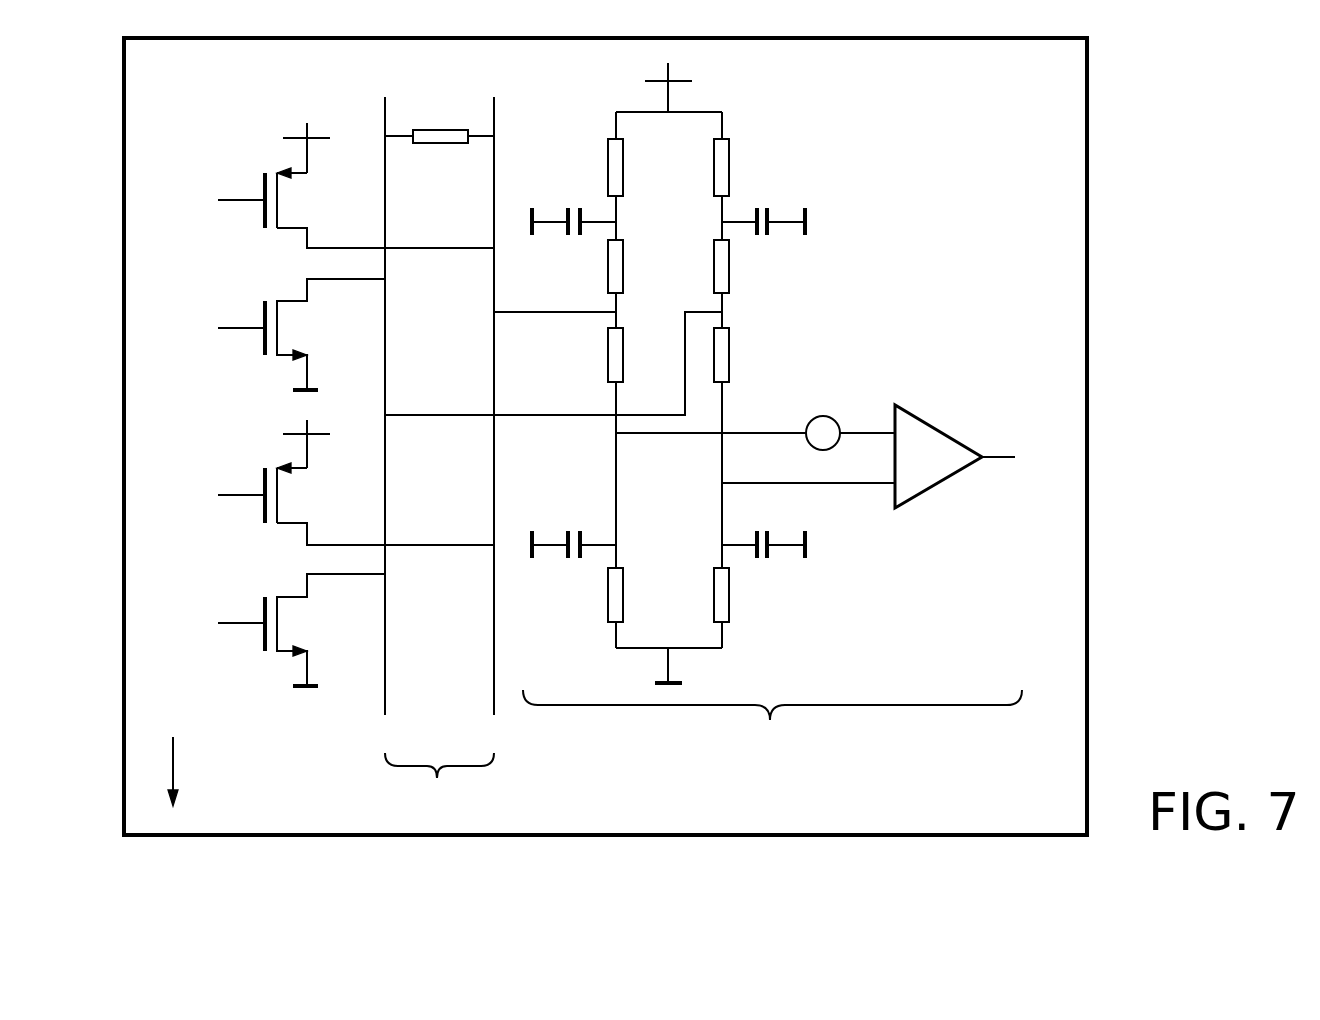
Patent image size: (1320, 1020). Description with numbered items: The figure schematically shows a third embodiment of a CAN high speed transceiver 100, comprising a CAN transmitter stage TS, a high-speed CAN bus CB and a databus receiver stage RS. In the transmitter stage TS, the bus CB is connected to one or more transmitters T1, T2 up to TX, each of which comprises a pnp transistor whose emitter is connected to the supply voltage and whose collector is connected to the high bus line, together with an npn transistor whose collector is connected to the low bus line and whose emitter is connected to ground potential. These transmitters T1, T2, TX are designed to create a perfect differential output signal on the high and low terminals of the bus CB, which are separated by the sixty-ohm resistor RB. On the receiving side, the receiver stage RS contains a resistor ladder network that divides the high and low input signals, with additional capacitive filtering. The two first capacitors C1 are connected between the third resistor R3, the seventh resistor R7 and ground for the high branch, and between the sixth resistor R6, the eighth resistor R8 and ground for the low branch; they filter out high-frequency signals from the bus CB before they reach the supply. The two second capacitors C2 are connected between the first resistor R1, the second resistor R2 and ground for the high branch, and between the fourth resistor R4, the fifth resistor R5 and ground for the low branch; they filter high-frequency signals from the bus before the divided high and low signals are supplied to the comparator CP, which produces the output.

The CAN high speed transceiver 100 is at (1087, 648).
The CAN transmitter stage TS is at (275, 813).
The transmitter TX is at (187, 727).
The transmitter T1 is at (253, 263).
The transmitter T2 is at (253, 560).
The high speed CAN bus CB is at (455, 818).
The resistor RB is at (439, 123).
The databus receiver stage RS is at (785, 753).
The first resistor R1 is at (600, 638).
The second resistor R2 is at (600, 370).
The third resistor R3 is at (600, 280).
The fourth resistor R4 is at (770, 638).
The fifth resistor R5 is at (770, 370).
The sixth resistor R6 is at (705, 280).
The seventh resistor R7 is at (660, 173).
The eighth resistor R8 is at (768, 158).
The first capacitor C1 is at (585, 200).
The second capacitor C2 is at (585, 523).
The comparator CP is at (973, 466).